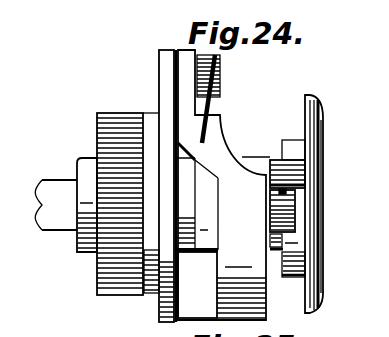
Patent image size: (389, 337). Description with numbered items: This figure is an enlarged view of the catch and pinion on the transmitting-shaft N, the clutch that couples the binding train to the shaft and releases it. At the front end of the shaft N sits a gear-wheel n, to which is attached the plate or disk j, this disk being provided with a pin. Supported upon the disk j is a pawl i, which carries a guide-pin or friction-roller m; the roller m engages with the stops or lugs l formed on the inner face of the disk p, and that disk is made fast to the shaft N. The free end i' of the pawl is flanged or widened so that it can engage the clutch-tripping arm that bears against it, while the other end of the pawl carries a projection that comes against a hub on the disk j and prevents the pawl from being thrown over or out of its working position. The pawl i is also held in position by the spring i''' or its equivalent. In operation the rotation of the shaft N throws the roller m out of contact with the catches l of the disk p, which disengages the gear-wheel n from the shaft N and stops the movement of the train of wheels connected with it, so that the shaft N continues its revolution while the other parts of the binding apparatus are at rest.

The transmitting-shaft N is at (66, 205).
The gear-wheel n is at (128, 195).
The plate or disk j is at (185, 207).
The pawl i is at (223, 185).
The free end of pawl i' is at (197, 285).
The spring i''' is at (225, 99).
The stops l is at (287, 168).
The guide-pin or friction-roller m is at (295, 213).
The disk p is at (322, 160).